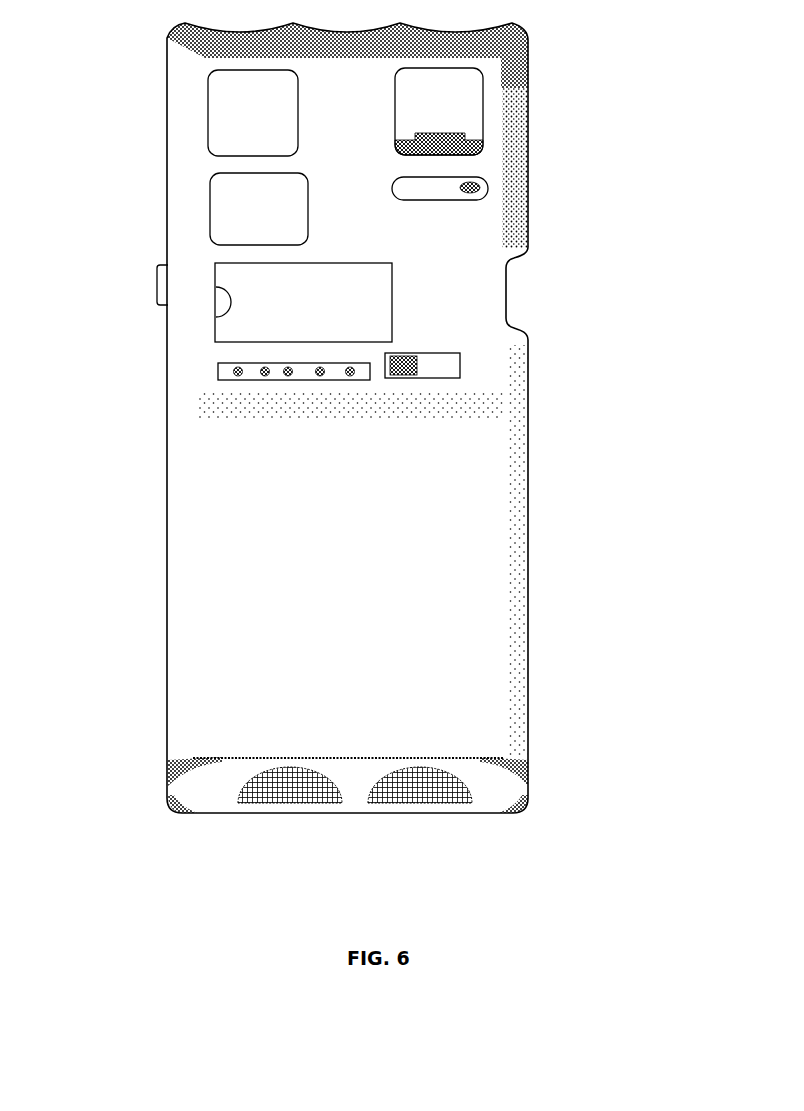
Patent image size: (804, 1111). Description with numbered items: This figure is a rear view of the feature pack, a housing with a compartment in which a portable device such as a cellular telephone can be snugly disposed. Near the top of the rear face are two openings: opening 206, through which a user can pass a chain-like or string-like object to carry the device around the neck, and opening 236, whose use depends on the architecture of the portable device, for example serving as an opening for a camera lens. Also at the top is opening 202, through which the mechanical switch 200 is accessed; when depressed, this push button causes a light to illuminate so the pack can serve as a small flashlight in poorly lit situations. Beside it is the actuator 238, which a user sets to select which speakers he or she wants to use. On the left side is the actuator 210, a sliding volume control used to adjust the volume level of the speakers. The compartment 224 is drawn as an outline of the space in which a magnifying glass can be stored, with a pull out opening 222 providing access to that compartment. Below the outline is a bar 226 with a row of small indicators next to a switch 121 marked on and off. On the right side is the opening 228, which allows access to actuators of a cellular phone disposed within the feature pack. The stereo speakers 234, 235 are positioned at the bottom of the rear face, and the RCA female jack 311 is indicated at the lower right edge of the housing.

The on/off power switch 121 is at (460, 367).
The mechanical switch 200 is at (463, 136).
The opening 202 is at (468, 86).
The opening 206 is at (212, 122).
The actuator 210 is at (157, 280).
The pull out opening 222 is at (222, 302).
The compartment 224 is at (257, 327).
The indicator light bar 226 is at (218, 368).
The opening 228 is at (507, 285).
The stereo speaker 234 is at (295, 806).
The stereo speaker 235 is at (420, 806).
The opening 236 is at (212, 208).
The actuator 238 is at (488, 179).
The RCA female jack 311 is at (532, 745).